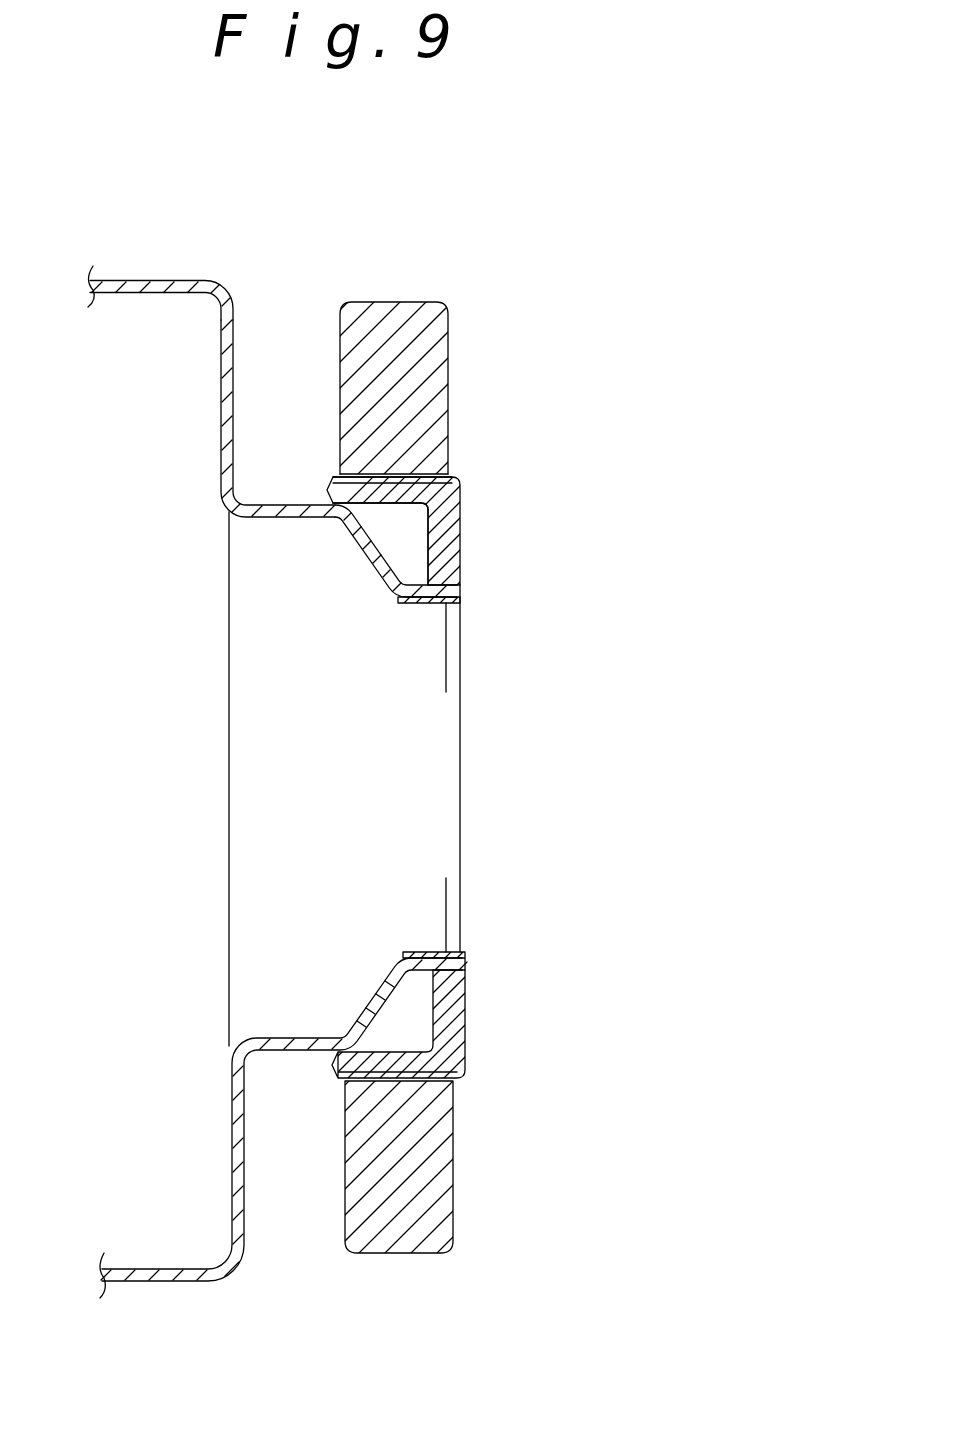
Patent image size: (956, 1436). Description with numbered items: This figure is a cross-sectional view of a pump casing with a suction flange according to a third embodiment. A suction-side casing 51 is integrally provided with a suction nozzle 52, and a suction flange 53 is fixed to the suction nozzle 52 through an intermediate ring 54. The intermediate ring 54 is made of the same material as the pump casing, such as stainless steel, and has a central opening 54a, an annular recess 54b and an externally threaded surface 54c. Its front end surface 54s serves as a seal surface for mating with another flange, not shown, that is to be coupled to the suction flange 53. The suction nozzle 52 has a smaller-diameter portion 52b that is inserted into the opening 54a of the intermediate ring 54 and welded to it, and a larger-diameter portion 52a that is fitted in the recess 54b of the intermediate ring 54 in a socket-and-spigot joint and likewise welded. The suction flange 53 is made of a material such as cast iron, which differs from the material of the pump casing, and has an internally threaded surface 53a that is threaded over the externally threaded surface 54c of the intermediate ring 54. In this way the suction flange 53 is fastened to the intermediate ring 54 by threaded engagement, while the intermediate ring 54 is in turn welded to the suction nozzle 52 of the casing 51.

The suction-side casing 51 is at (162, 280).
The suction nozzle 52 is at (282, 503).
The larger-diameter portion 52a is at (263, 498).
The smaller-diameter portion 52b is at (432, 598).
The suction flange 53 is at (430, 312).
The internally threaded surface 53a is at (327, 490).
The intermediate ring 54 is at (457, 542).
The central opening 54a is at (450, 605).
The annular recess 54b is at (375, 545).
The externally threaded surface 54c is at (405, 476).
The front end surface 54s is at (460, 568).